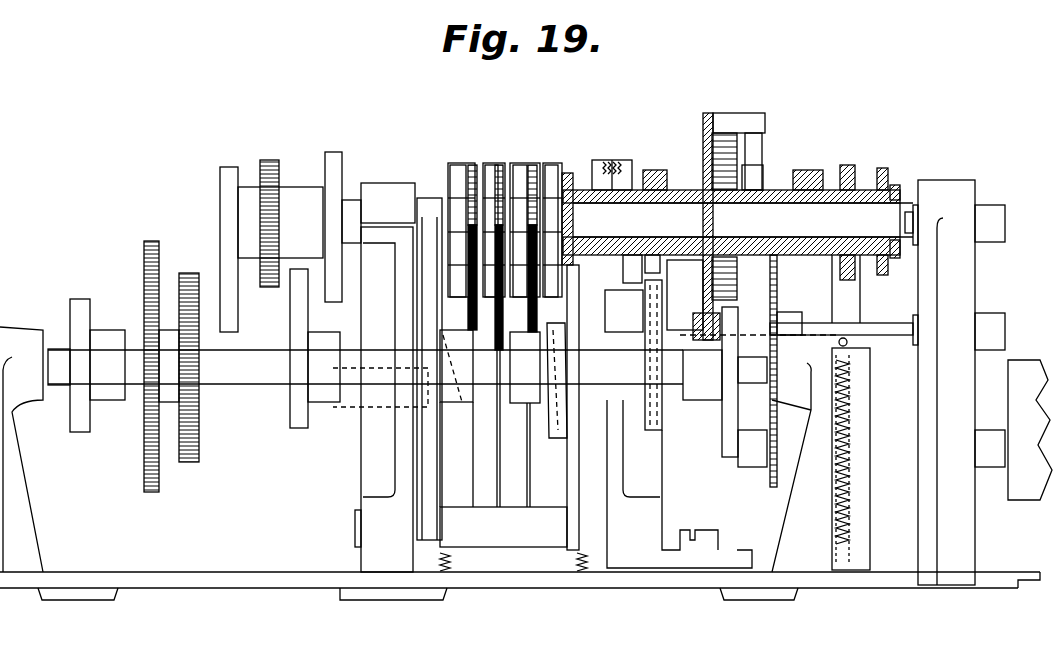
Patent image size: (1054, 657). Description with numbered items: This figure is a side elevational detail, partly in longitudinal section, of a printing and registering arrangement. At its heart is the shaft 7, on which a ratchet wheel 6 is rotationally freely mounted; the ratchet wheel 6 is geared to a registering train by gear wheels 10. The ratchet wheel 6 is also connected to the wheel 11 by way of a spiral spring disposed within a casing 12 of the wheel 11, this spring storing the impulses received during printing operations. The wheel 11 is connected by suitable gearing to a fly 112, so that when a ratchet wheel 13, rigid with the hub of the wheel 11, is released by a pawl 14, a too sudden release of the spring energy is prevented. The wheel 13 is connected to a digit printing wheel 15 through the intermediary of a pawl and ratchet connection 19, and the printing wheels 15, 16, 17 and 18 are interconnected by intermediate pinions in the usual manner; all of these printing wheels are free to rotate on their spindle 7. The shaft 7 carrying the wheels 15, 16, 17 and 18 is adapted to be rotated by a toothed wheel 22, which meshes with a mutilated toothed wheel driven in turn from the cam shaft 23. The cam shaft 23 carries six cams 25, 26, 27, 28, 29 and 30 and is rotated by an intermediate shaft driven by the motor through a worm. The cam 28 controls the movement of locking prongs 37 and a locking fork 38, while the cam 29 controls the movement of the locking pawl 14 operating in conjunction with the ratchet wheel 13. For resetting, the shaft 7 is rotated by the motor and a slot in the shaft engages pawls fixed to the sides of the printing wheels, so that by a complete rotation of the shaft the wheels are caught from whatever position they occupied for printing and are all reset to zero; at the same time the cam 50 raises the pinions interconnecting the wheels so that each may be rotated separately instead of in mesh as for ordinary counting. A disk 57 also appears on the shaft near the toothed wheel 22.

The ratchet wheel 6 is at (808, 182).
The shaft 7 is at (731, 219).
The gear wheels 10 is at (882, 172).
The wheel 11 is at (705, 128).
The casing 12 is at (728, 150).
The ratchet wheel 13 is at (656, 178).
The locking pawl 14 is at (712, 207).
The digit printing wheel 15 is at (575, 157).
The printing wheel 16 is at (540, 157).
The printing wheel 17 is at (507, 157).
The printing wheel 18 is at (462, 168).
The pawl and ratchet connection 19 is at (612, 165).
The toothed wheel 22 is at (280, 152).
The cam shaft 23 is at (258, 372).
The cam 25 is at (79, 425).
The cam 26 is at (296, 405).
The cam 27 is at (428, 483).
The cam 28 is at (563, 440).
The cam 29 is at (667, 427).
The cam 30 is at (733, 450).
The locking prongs 37 is at (530, 507).
The locking fork 38 is at (562, 440).
The cam 50 is at (337, 157).
The disk 57 is at (232, 155).
The fly 112 is at (1030, 372).